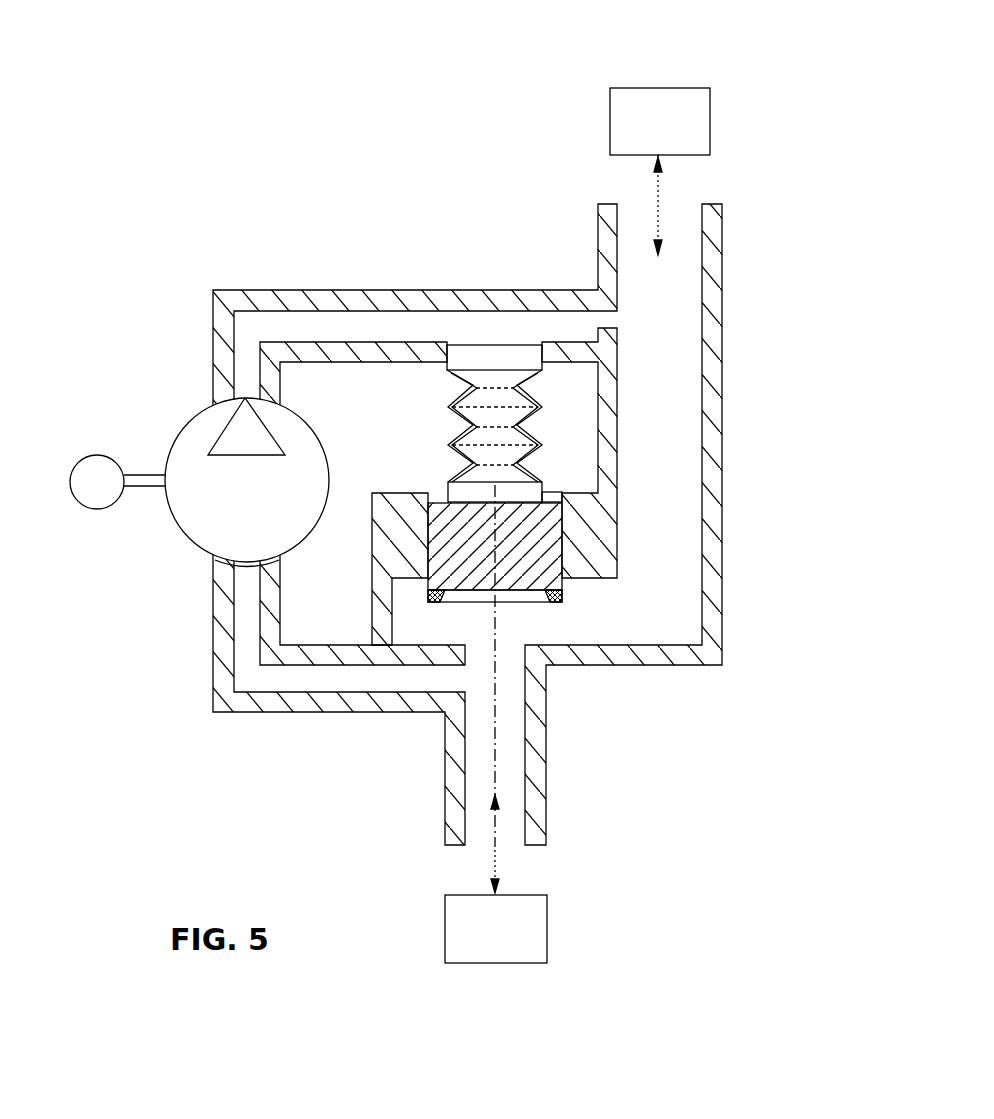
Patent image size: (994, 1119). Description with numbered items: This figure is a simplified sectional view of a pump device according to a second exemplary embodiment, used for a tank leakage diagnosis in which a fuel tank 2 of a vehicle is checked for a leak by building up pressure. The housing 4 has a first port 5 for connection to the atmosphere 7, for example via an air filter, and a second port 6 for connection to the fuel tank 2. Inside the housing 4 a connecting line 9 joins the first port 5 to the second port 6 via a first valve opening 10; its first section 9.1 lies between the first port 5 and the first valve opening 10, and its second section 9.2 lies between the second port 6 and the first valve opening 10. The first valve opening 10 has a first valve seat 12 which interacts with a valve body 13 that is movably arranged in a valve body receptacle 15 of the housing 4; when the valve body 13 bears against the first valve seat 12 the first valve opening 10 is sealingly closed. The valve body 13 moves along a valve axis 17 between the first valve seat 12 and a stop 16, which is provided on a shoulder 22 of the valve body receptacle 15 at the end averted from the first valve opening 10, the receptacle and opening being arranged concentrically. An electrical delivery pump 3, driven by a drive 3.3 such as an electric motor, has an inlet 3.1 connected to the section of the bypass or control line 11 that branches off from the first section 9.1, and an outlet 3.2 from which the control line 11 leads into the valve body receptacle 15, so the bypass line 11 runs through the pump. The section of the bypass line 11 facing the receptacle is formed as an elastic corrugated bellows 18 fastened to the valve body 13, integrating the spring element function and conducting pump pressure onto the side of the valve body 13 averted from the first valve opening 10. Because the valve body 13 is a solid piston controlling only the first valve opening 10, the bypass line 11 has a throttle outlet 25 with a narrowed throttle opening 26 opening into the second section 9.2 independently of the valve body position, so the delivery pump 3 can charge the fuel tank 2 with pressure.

The fuel tank 2 is at (658, 103).
The delivery pump 3 is at (221, 480).
The inlet 3.1 is at (240, 550).
The outlet 3.2 is at (235, 403).
The drive 3.3 is at (97, 457).
The housing 4 is at (677, 657).
The first port 5 is at (455, 785).
The second port 6 is at (603, 230).
The atmosphere 7 is at (525, 935).
The connecting line 9 is at (682, 398).
The first section 9.1 is at (505, 778).
The second section 9.2 is at (680, 287).
The first valve opening 10 is at (512, 653).
The control line 11 is at (242, 368).
The first valve seat 12 is at (551, 630).
The valve body 13 is at (548, 520).
The valve body receptacle 15 is at (568, 563).
The stop 16 is at (548, 496).
The valve axis 17 is at (495, 742).
The corrugated bellows 18 is at (460, 418).
The shoulder 22 is at (675, 481).
The throttle outlet 25 is at (557, 327).
The throttle opening 26 is at (605, 320).